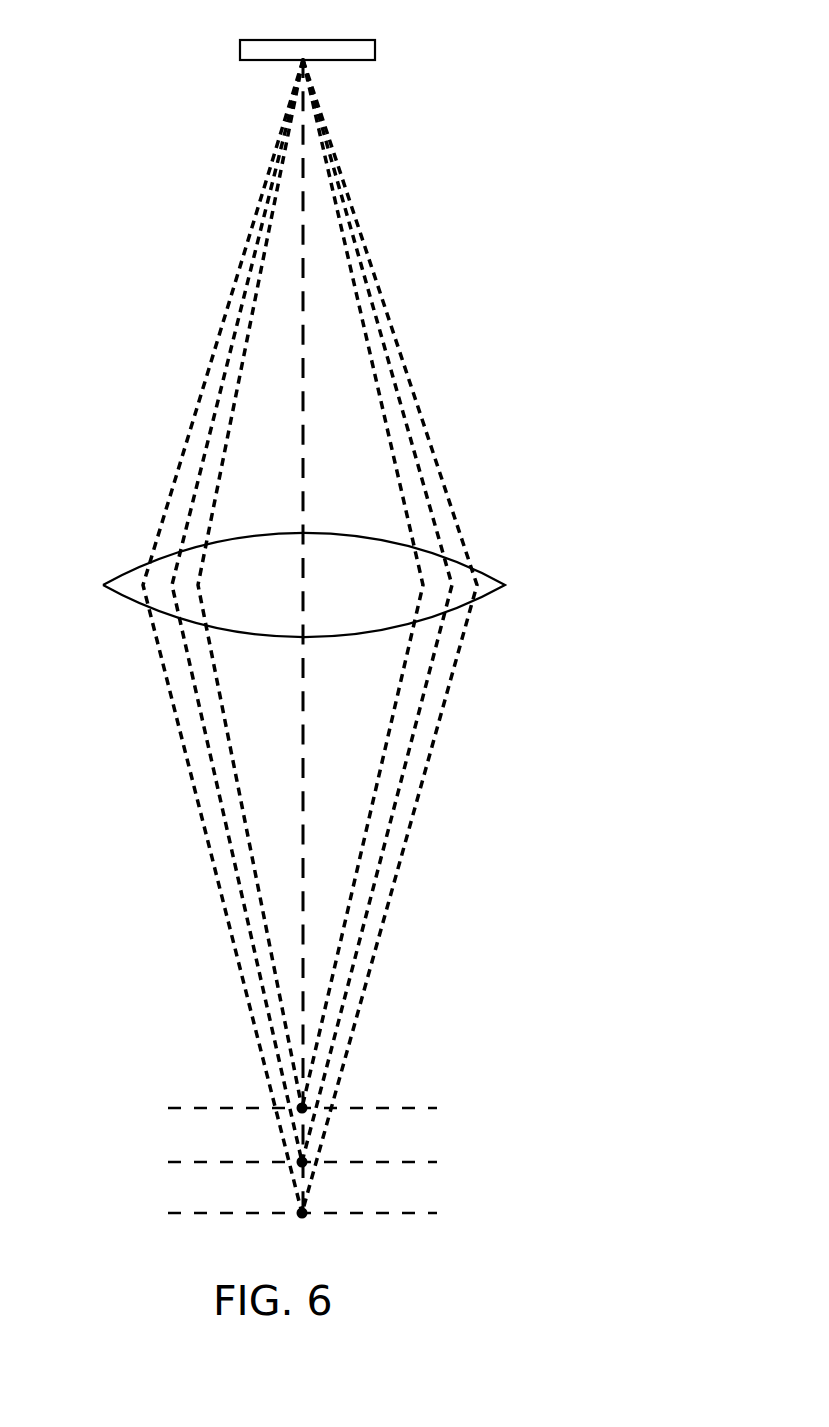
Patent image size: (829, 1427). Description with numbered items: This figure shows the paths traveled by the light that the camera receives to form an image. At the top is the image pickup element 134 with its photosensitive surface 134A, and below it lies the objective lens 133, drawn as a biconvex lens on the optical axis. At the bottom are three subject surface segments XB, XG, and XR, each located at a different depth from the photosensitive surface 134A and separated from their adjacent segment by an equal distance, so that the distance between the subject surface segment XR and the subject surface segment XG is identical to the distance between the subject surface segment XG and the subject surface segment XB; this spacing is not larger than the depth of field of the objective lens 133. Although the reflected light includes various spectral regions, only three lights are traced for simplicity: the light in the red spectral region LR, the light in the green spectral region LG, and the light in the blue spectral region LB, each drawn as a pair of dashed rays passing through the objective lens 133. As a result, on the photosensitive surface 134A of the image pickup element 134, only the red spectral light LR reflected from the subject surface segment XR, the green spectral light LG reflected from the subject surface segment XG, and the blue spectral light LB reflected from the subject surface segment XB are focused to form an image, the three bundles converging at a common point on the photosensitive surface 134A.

The image pickup element 134 is at (376, 48).
The photosensitive surface 134A is at (255, 60).
The objective lens 133 is at (130, 597).
The light in the red spectral region LR is at (237, 280).
The light in the green spectral region LG is at (225, 378).
The light in the blue spectral region LB is at (218, 482).
The subject surface segment XB is at (417, 1108).
The subject surface segment XG is at (415, 1161).
The subject surface segment XR is at (415, 1213).